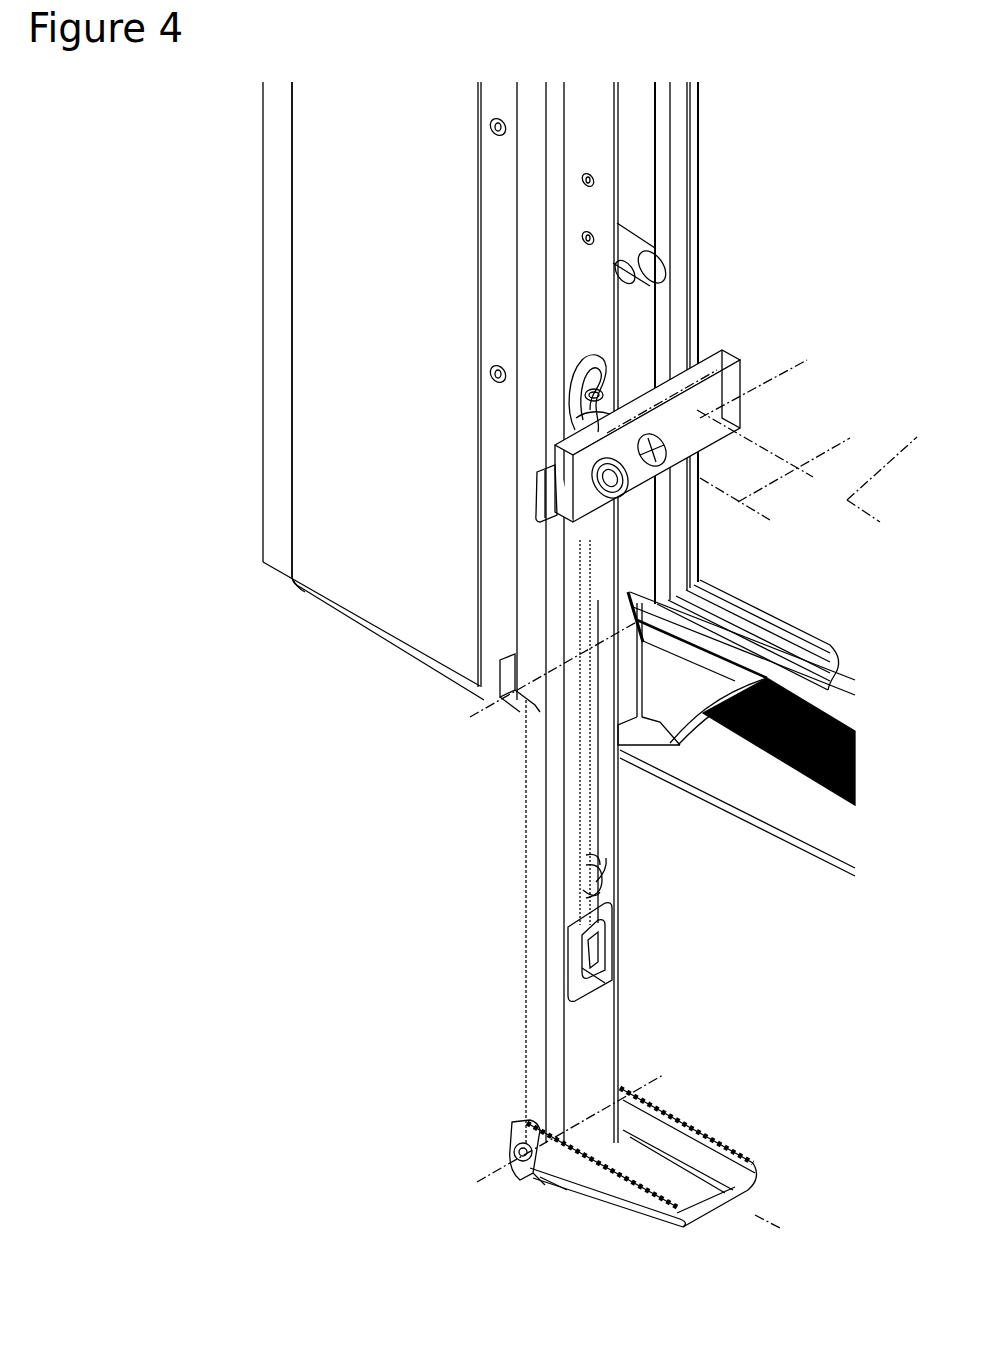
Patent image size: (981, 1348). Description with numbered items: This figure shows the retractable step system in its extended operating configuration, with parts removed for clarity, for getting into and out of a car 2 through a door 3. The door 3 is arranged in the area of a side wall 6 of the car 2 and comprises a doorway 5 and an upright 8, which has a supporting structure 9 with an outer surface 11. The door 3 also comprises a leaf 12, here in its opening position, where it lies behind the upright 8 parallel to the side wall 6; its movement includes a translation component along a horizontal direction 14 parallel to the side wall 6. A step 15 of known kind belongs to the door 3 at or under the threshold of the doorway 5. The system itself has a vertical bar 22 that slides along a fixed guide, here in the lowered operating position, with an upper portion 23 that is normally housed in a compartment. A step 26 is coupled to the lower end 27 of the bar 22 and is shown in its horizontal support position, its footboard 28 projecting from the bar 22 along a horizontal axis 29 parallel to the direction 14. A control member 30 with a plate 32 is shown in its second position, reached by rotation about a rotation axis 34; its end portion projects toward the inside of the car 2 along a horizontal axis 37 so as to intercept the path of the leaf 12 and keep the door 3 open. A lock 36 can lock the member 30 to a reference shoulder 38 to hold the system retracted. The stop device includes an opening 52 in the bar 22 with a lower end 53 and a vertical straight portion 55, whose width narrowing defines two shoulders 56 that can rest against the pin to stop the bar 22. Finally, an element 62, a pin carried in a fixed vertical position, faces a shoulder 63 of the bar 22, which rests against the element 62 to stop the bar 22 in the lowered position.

The car 2 is at (250, 584).
The door 3 is at (655, 110).
The doorway 5 is at (729, 609).
The side wall 6 is at (270, 507).
The upright 8 is at (366, 628).
The supporting structure 9 is at (323, 567).
The outer surface 11 is at (494, 497).
The leaf 12 is at (700, 180).
The horizontal direction 14 is at (917, 437).
The step 15 is at (790, 777).
The vertical bar 22 is at (522, 818).
The upper portion 23 is at (578, 268).
The step 26 is at (663, 1240).
The lower end 27 is at (603, 1017).
The footboard 28 is at (697, 1132).
The horizontal axis 29 is at (768, 1222).
The control member 30 is at (744, 355).
The plate 32 is at (705, 375).
The rotation axis 34 is at (832, 478).
The lock 36 is at (710, 459).
The horizontal axis 37 is at (808, 398).
The reference shoulder 38 is at (617, 938).
The opening 52 is at (592, 877).
The lower end 53 is at (593, 898).
The straight portion 55 is at (585, 853).
The shoulders 56 is at (583, 890).
The element 62 is at (505, 690).
The shoulder 63 is at (548, 730).